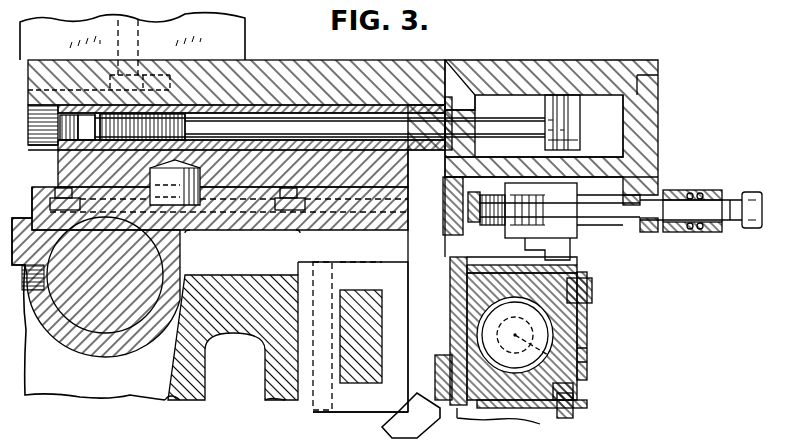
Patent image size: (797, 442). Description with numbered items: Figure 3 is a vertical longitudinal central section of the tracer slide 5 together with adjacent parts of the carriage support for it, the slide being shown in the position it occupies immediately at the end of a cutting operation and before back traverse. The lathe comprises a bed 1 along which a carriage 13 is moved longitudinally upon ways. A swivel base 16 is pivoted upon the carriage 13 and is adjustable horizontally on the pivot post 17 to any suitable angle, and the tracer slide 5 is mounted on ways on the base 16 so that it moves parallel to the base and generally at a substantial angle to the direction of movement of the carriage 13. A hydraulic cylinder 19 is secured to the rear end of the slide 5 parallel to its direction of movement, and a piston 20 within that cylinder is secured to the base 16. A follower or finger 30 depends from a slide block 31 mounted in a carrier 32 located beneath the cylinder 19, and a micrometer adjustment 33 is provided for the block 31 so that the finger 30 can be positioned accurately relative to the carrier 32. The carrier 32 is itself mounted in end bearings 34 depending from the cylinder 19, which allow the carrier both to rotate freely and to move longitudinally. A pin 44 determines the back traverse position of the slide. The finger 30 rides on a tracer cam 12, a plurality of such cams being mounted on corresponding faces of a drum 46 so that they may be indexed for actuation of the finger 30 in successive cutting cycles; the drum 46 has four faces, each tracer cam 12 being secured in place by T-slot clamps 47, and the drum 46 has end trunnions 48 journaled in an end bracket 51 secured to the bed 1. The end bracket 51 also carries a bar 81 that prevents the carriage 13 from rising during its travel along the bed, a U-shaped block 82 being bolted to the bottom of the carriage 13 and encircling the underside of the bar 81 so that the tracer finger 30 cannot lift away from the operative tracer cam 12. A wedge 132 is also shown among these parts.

The bed 1 is at (158, 396).
The tracer slide 5 is at (295, 60).
The tracer cam 12 is at (520, 273).
The carriage 13 is at (258, 229).
The swivel base 16 is at (58, 160).
The pivot post 17 is at (187, 208).
The hydraulic cylinder 19 is at (516, 60).
The piston 20 is at (570, 95).
The follower or finger 30 is at (575, 250).
The slide block 31 is at (575, 200).
The carrier 32 is at (620, 224).
The micrometer adjustment 33 is at (752, 192).
The end bearings 34 is at (452, 236).
The pin 44 is at (360, 427).
The drum 46 is at (585, 385).
The T-slot clamps 47 is at (592, 298).
The end trunnions 48 is at (585, 355).
The end bracket 51 is at (438, 290).
The bar 81 is at (359, 300).
The U-shaped block 82 is at (305, 410).
The wedge 132 is at (432, 428).